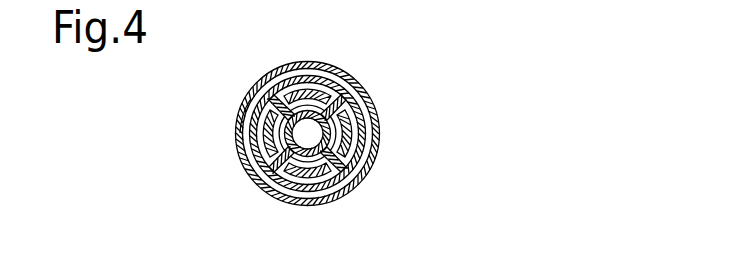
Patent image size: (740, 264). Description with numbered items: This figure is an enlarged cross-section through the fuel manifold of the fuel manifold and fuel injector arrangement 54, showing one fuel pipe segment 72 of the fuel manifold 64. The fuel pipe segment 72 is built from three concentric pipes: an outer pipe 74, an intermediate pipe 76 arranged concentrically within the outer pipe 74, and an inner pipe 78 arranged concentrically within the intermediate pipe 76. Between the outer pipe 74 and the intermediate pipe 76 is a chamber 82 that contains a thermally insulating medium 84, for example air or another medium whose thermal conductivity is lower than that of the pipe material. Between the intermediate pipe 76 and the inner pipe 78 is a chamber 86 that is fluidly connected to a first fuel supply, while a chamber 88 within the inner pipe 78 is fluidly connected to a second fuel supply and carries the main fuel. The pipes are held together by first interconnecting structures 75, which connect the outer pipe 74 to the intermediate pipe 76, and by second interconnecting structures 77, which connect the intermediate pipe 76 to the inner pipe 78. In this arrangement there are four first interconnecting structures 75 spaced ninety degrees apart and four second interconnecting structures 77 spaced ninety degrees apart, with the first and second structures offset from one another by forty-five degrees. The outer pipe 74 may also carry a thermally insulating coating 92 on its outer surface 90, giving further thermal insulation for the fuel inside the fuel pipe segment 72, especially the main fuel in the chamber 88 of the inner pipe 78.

The fuel manifold and fuel injector arrangement 54 is at (498, 64).
The fuel manifold 64 is at (382, 110).
The fuel pipe segment 72 is at (373, 98).
The outer pipe 74 is at (373, 162).
The first interconnecting structures 75 is at (255, 88).
The intermediate pipe 76 is at (302, 86).
The second interconnecting structures 77 is at (353, 132).
The inner pipe 78 is at (267, 177).
The chamber 82 is at (350, 188).
The thermally insulating medium 84 is at (333, 170).
The chamber 86 is at (266, 130).
The chamber 88 is at (304, 127).
The outer surface 90 is at (252, 177).
The thermally insulating coating 92 is at (236, 139).